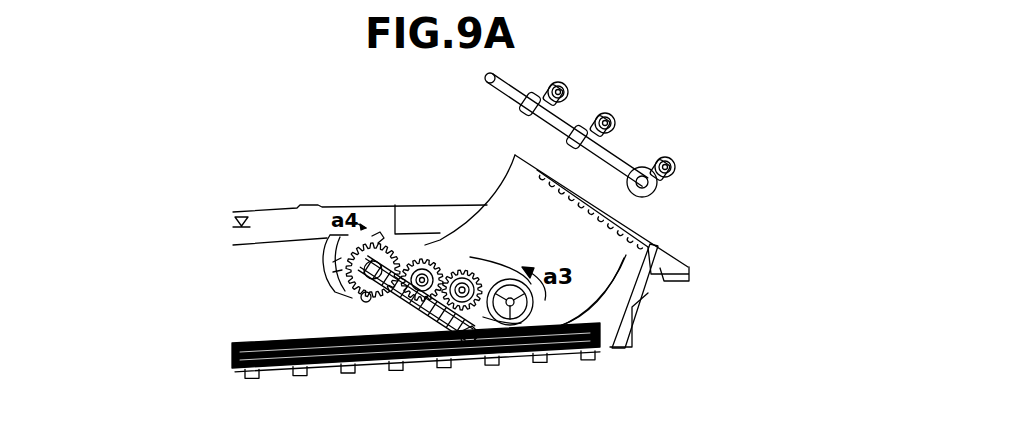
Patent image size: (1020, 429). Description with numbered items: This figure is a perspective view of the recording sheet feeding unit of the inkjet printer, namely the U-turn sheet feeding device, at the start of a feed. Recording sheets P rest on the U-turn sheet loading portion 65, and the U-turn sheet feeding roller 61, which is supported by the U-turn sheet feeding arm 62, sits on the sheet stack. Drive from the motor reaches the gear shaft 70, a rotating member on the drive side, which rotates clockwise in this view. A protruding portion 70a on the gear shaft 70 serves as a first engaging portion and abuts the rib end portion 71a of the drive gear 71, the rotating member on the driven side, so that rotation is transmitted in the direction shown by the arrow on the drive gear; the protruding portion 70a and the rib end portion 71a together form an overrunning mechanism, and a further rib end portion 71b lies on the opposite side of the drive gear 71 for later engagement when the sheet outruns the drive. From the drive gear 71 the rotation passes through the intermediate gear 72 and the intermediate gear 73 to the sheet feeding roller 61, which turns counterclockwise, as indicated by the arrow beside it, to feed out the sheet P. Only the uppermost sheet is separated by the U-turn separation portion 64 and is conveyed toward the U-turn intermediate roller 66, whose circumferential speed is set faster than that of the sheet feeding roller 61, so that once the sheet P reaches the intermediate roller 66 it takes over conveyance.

The U-turn sheet feeding roller 61 is at (541, 352).
The U-turn sheet feeding arm 62 is at (437, 250).
The U-turn separation portion 64 is at (618, 318).
The U-turn sheet loading portion 65 is at (397, 363).
The U-turn intermediate roller 66 is at (632, 175).
The gear shaft 70 is at (465, 346).
The protruding portion 70a is at (376, 292).
The drive gear 71 is at (376, 243).
The rib end portion 71a is at (362, 297).
The rib end portion 71b is at (330, 278).
The intermediate gear 72 is at (421, 258).
The intermediate gear 73 is at (464, 270).
The sheet P is at (626, 257).